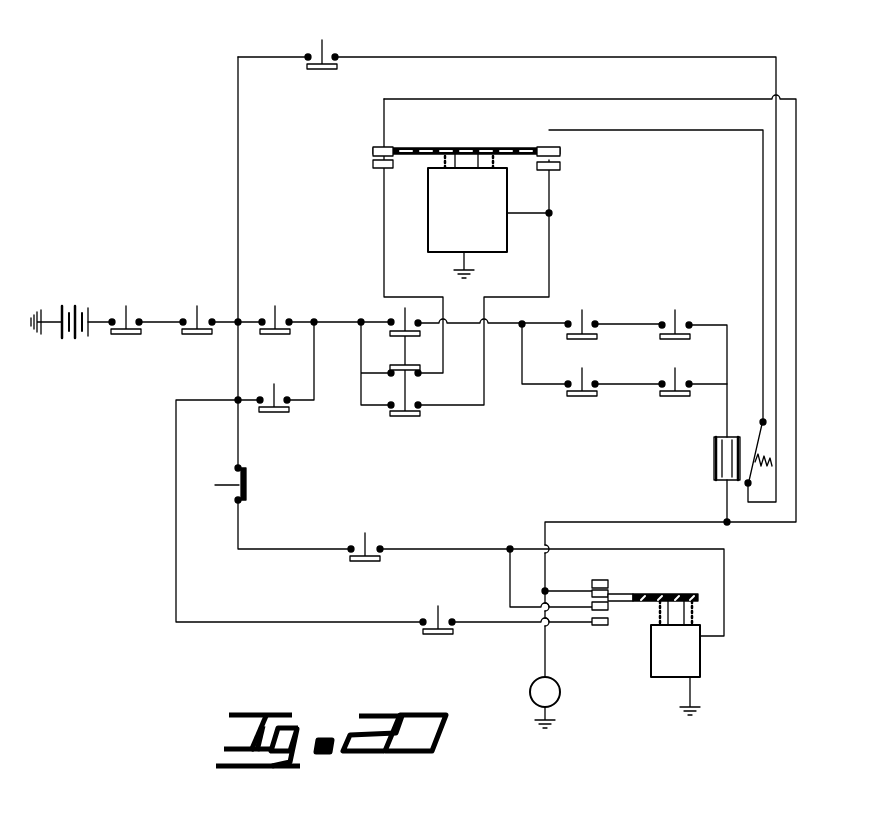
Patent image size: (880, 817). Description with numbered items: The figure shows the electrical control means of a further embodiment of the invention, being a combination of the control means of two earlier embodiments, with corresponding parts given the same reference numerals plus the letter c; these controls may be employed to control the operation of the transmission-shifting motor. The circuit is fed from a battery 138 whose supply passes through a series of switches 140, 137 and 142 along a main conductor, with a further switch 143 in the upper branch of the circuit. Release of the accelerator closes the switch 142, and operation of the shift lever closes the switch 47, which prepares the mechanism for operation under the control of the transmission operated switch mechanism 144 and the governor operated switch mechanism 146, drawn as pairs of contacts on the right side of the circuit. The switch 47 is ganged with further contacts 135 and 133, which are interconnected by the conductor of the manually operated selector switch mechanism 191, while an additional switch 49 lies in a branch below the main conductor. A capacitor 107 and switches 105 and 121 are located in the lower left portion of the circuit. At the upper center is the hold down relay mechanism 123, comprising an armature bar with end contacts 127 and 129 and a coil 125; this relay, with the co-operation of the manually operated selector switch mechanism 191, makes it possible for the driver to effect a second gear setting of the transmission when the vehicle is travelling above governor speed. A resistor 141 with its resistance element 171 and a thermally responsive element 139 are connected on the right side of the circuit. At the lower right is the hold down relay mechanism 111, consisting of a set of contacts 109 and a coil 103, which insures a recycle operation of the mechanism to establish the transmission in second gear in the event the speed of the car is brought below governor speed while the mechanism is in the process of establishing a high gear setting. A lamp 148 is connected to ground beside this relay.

The battery 138 is at (77, 292).
The switch 140 is at (120, 338).
The switch 137 is at (195, 338).
The switch 142 is at (264, 312).
The switch 143 is at (334, 50).
The switch 47 is at (397, 318).
The switch contact 135 is at (412, 378).
The switch contact 133 is at (385, 418).
The manually operated selector switch mechanism 191 is at (379, 356).
The switch 49 is at (273, 424).
The capacitor 107 is at (252, 487).
The switch 105 is at (375, 540).
The switch 121 is at (437, 640).
The transmission operated switch mechanism 144 is at (584, 345).
The governor operated switch mechanism 146 is at (676, 345).
The resistor 141 is at (716, 438).
The resistor element 171 is at (713, 455).
The thermal switch 139 is at (757, 420).
The hold down relay mechanism 123 is at (553, 176).
The relay contact 127 is at (372, 163).
The relay contact 129 is at (564, 161).
The relay coil 125 is at (438, 228).
The relay contacts 109 is at (614, 587).
The relay coil 103 is at (698, 665).
The hold down relay mechanism 111 is at (645, 654).
The lamp 148 is at (530, 692).